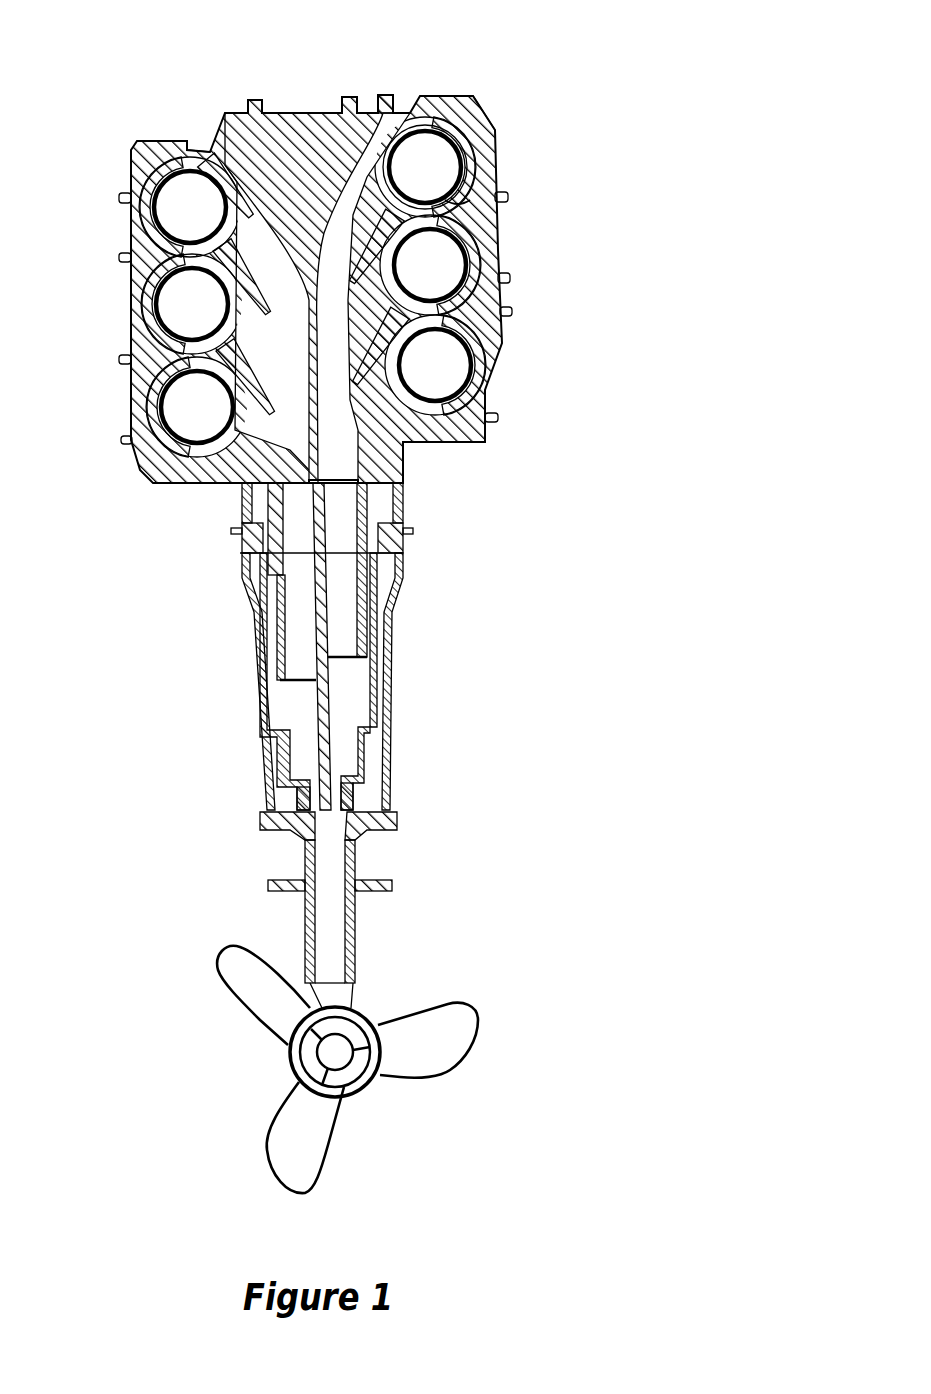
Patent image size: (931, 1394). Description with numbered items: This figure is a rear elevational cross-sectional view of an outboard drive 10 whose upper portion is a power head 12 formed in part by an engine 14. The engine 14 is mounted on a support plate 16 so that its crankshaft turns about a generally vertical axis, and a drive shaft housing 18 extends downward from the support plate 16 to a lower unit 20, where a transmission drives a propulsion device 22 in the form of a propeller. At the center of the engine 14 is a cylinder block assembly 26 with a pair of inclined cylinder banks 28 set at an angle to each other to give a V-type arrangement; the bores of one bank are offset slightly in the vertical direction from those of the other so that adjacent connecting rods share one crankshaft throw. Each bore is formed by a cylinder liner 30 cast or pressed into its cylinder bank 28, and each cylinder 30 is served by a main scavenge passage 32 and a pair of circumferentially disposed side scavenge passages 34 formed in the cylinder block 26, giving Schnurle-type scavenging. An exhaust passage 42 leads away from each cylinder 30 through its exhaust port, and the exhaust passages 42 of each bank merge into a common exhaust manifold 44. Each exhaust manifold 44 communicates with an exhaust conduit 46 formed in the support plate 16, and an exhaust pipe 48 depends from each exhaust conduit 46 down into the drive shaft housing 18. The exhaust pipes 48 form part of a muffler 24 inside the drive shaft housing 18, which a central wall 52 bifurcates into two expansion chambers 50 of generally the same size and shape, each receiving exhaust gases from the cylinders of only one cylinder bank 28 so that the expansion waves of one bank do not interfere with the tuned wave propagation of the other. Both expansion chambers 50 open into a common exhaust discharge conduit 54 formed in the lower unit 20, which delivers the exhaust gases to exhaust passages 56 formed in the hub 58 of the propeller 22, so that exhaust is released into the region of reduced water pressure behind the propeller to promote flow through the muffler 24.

The outboard drive 10 is at (556, 586).
The power head 12 is at (530, 50).
The engine 14 is at (546, 165).
The support plate 16 is at (423, 504).
The drive shaft housing 18 is at (368, 655).
The lower unit 20 is at (345, 938).
The propulsion device 22 is at (415, 1005).
The muffler 24 is at (386, 697).
The cylinder block assembly 26 is at (133, 291).
The cylinder bank 28 is at (185, 140).
The cylinder liner 30 is at (427, 141).
The main scavenge passage 32 is at (497, 135).
The side scavenge passage 34 is at (408, 110).
The exhaust passage 42 is at (248, 215).
The exhaust manifold 44 is at (347, 460).
The exhaust conduit 46 is at (243, 540).
The exhaust pipe 48 is at (378, 607).
The expansion chamber 50 is at (312, 752).
The central wall 52 is at (342, 765).
The exhaust discharge conduit 54 is at (325, 922).
The exhaust passage 56 is at (350, 1075).
The hub 58 is at (292, 1058).